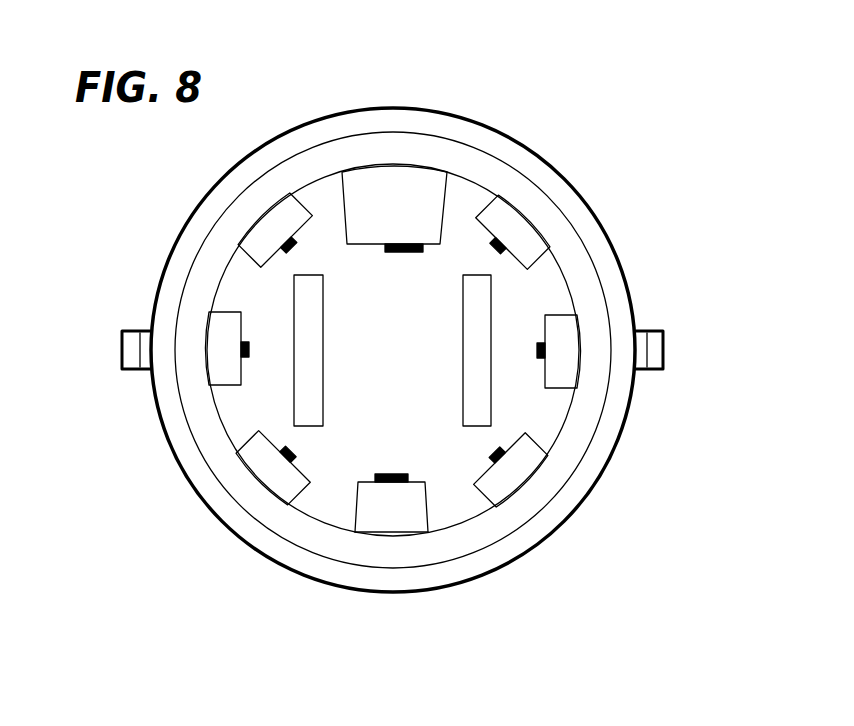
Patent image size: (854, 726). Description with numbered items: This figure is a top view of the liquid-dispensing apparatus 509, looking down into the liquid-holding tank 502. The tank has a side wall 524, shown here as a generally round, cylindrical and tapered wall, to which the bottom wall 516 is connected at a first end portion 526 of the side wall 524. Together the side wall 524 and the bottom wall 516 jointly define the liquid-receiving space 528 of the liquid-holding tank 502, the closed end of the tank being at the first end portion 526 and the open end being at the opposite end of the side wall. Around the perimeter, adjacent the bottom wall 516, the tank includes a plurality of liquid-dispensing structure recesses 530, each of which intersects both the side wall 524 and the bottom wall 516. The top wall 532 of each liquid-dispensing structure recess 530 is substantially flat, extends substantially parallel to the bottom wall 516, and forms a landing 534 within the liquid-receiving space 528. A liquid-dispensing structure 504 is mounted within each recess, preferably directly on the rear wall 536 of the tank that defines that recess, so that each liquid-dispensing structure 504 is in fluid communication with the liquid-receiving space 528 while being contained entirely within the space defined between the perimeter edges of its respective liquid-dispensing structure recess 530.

The liquid-holding tank 502 is at (608, 428).
The liquid-dispensing structures 504 is at (287, 243).
The assembly 509 is at (547, 107).
The bottom wall 516 is at (467, 498).
The side wall 524 is at (552, 465).
The first end portion 526 is at (322, 522).
The liquid-receiving space 528 is at (533, 300).
The liquid-dispensing structure recesses 530 is at (260, 245).
The top wall 532 is at (403, 503).
The landing 534 is at (381, 517).
The rear wall 536 is at (367, 482).